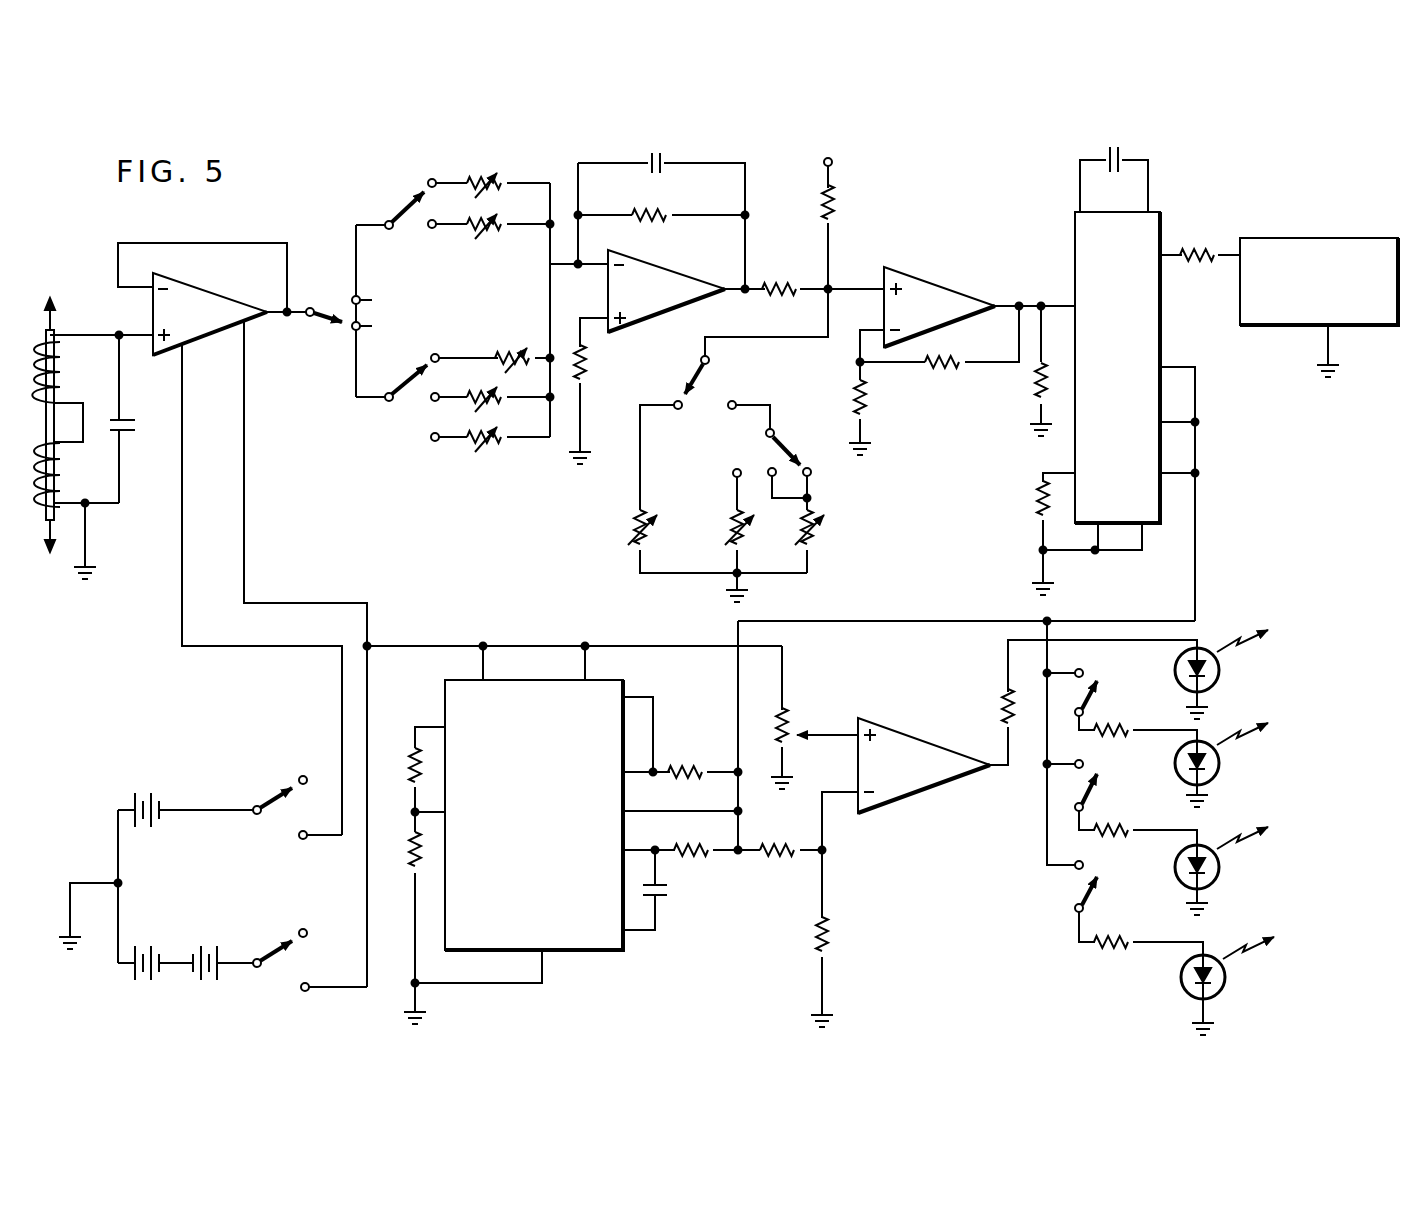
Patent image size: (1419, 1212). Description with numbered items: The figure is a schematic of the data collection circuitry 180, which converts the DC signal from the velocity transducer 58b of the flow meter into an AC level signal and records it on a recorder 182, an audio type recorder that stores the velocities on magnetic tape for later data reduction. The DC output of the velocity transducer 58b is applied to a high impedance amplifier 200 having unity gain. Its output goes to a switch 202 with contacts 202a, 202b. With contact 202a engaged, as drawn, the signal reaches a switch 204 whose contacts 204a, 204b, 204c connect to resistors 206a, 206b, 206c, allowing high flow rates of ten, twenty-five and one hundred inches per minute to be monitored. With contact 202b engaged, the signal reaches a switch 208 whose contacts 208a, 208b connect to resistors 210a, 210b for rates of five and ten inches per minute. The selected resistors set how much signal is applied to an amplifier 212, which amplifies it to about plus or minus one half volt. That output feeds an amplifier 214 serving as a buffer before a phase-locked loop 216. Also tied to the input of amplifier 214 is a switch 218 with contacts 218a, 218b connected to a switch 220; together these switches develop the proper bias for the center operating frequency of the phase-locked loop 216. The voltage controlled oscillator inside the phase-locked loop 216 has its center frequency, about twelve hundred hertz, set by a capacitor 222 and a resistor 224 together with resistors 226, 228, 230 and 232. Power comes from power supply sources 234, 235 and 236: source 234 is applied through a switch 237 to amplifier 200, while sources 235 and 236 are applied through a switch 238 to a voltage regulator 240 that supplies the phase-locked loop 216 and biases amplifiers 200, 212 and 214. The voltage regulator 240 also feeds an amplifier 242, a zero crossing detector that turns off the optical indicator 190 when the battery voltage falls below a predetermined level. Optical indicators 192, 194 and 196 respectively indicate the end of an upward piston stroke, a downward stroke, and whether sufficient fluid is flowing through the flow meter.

The velocity transducer 58b is at (52, 373).
The data collection circuitry 180 is at (165, 630).
The recorder 182 is at (1288, 255).
The optical indicator 190 is at (1215, 678).
The optical indicator 192 is at (1217, 765).
The optical indicator 194 is at (1217, 865).
The optical indicator 196 is at (1222, 975).
The high impedance amplifier 200 is at (207, 307).
The switch 202 is at (327, 323).
The contact 202a is at (390, 326).
The contact 202b is at (390, 301).
The switch 204 is at (405, 378).
The contact 204a is at (440, 353).
The contact 204b is at (427, 403).
The contact 204c is at (433, 443).
The resistor 206a is at (537, 340).
The resistor 206b is at (502, 390).
The resistor 206c is at (493, 443).
The switch 208 is at (405, 202).
The contact 208a is at (430, 178).
The contact 208b is at (427, 230).
The resistor 210a is at (490, 176).
The resistor 210b is at (470, 231).
The amplifier 212 is at (663, 282).
The amplifier 214 is at (930, 291).
The phase-locked loop 216 is at (1102, 331).
The switch 218 is at (692, 382).
The contact 218a is at (680, 410).
The contact 218b is at (733, 397).
The switch 220 is at (792, 453).
The capacitor 222 is at (1148, 177).
The resistor 224 is at (1036, 504).
The resistor 226 is at (838, 200).
The resistor 228 is at (632, 532).
The resistor 230 is at (728, 528).
The resistor 232 is at (817, 537).
The power supply source 234 is at (135, 795).
The power supply source 235 is at (135, 953).
The power supply source 236 is at (207, 953).
The switch 237 is at (268, 800).
The switch 238 is at (278, 950).
The voltage regulator 240 is at (510, 846).
The amplifier 242 is at (918, 783).